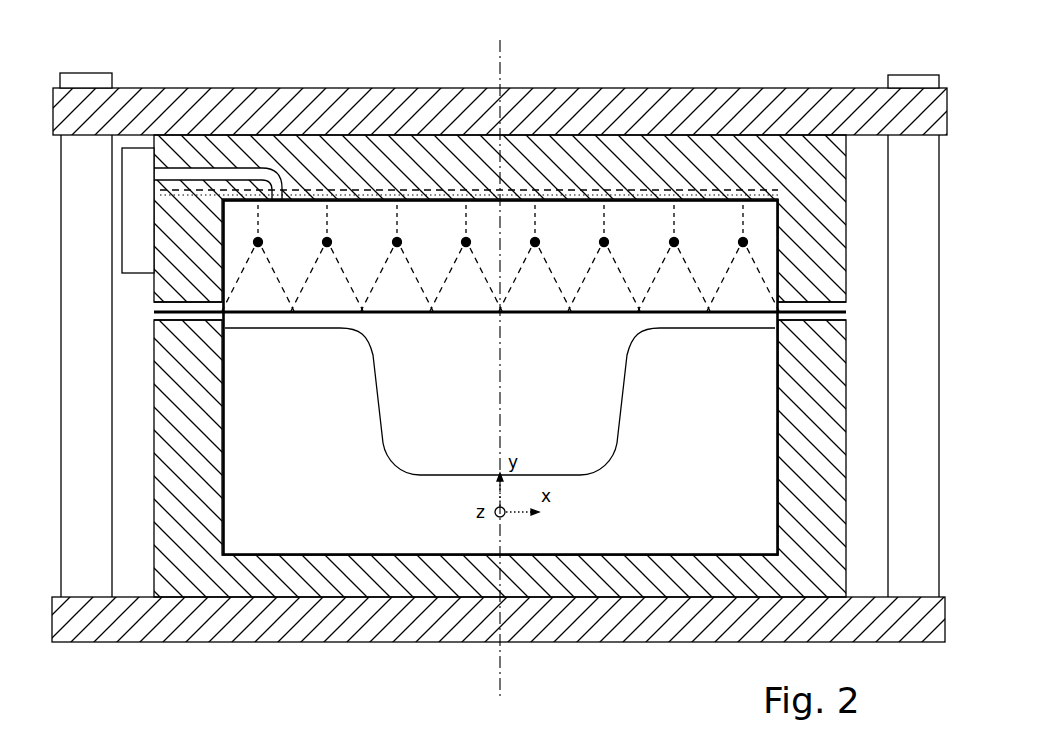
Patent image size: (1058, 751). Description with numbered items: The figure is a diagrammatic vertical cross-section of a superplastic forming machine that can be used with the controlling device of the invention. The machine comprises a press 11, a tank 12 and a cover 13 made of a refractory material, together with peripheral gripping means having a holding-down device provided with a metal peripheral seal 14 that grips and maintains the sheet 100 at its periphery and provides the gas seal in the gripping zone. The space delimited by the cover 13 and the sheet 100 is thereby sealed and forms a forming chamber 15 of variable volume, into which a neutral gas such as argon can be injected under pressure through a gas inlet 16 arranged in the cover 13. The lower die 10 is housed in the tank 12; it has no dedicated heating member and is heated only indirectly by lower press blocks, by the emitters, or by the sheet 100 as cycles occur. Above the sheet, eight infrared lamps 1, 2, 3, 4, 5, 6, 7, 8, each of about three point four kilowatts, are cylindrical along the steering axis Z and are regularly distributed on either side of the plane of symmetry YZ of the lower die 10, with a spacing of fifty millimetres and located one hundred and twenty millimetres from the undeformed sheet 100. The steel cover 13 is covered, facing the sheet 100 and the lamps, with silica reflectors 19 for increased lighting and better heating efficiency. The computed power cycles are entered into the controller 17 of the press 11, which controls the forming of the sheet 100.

The infrared lamp 1 is at (539, 240).
The infrared lamp 2 is at (608, 240).
The infrared lamp 3 is at (669, 243).
The infrared lamp 4 is at (739, 240).
The infrared lamp 5 is at (470, 240).
The infrared lamp 6 is at (401, 240).
The infrared lamp 7 is at (331, 240).
The infrared lamp 8 is at (262, 240).
The lower die 10 is at (434, 524).
The press 11 is at (801, 112).
The tank 12 is at (830, 430).
The cover 13 is at (833, 207).
The metal peripheral seal 14 is at (178, 318).
The forming chamber 15 is at (246, 301).
The gas inlet 16 is at (285, 198).
The controller 17 is at (137, 165).
The silica reflectors 19 is at (780, 252).
The sheet 100 is at (459, 328).